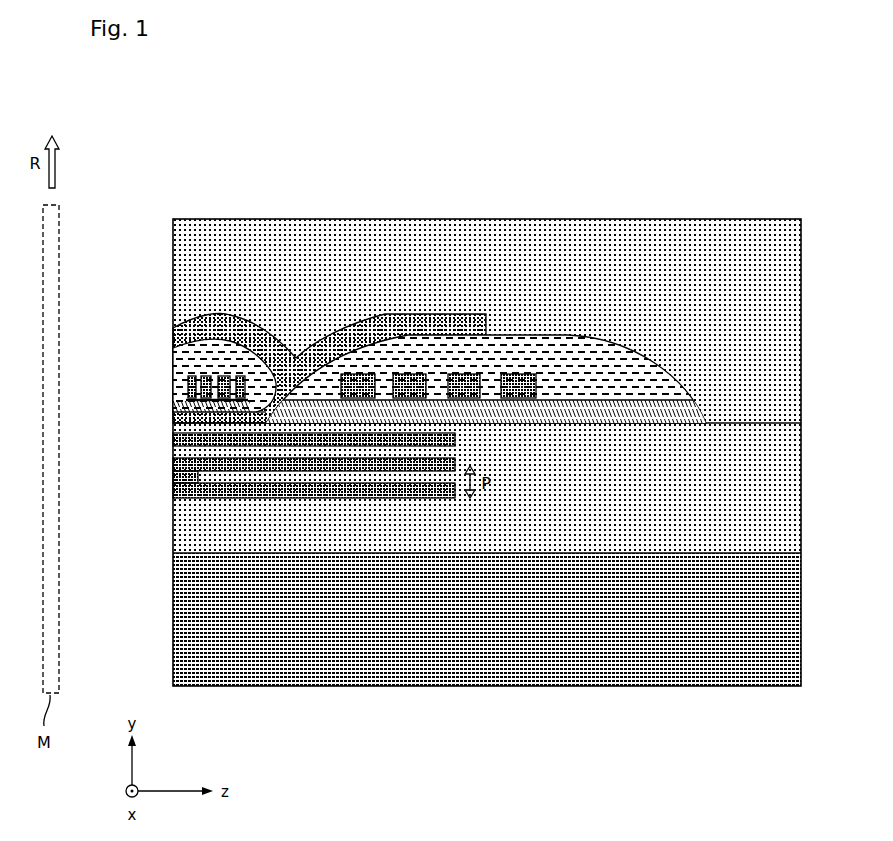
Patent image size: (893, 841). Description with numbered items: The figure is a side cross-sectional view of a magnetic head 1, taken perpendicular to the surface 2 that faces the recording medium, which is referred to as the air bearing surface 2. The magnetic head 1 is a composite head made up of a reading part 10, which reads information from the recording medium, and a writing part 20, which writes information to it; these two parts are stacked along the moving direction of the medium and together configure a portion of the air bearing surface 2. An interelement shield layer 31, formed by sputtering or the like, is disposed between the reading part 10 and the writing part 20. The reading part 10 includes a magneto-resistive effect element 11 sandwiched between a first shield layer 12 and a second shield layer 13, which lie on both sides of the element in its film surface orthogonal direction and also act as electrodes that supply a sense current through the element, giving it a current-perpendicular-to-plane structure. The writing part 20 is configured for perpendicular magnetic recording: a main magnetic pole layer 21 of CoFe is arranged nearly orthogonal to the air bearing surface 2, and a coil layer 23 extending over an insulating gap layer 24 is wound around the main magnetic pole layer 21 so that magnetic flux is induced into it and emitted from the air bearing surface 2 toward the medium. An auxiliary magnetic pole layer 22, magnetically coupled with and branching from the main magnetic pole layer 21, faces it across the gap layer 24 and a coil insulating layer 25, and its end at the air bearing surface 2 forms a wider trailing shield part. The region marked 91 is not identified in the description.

The magnetic head 1 is at (411, 194).
The air bearing surface 2 is at (165, 716).
The reading part 10 is at (104, 440).
The magneto-resistive effect (MR) element 11 is at (165, 468).
The first shield layer 12 is at (165, 482).
The second shield layer 13 is at (165, 455).
The writing part 20 is at (104, 308).
The main magnetic pole layer 21 is at (165, 410).
The auxiliary magnetic pole layer 22 is at (165, 325).
The coil layer 23 is at (165, 370).
The gap layer 24 is at (165, 392).
The coil insulating layer 25 is at (165, 347).
The interelement shield layer 31 is at (165, 432).
The slider substrate 91 is at (165, 612).